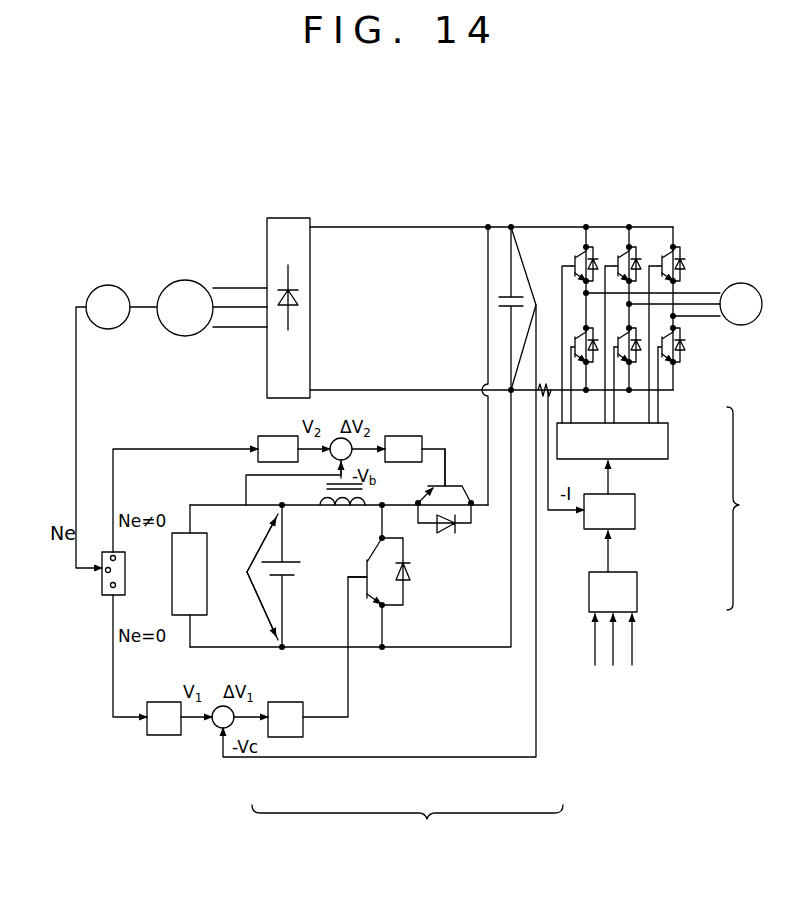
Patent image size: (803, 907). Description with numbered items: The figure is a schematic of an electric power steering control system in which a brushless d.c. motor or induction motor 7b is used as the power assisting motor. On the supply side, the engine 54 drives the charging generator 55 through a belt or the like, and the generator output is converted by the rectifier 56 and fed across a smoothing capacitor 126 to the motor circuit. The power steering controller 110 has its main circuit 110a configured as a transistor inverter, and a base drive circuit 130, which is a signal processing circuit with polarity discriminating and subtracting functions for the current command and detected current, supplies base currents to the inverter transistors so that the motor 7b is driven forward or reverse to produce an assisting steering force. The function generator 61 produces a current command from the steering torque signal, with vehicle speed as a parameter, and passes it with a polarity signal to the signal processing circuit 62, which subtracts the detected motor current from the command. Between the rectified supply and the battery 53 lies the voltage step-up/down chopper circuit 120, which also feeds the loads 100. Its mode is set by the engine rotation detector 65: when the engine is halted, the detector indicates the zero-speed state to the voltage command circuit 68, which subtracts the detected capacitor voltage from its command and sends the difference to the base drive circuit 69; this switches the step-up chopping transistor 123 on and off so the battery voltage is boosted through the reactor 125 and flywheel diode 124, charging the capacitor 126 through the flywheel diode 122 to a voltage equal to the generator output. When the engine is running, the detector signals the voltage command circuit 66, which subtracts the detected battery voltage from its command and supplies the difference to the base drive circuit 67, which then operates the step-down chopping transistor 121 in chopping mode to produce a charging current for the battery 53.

The engine 54 is at (108, 285).
The charging generator 55 is at (185, 280).
The rectifier 56 is at (287, 218).
The smoothing capacitor 126 is at (498, 297).
The main circuit 110a is at (628, 225).
The brushless d.c. motor or induction motor 7b is at (697, 240).
The base drive circuit 130 is at (668, 443).
The signal processing circuit 62 is at (636, 508).
The function generator 61 is at (638, 590).
The power steering controller 110 is at (743, 523).
The voltage command circuit 66 is at (265, 436).
The base drive circuit 67 is at (405, 436).
The voltage command circuit 68 is at (167, 737).
The base drive circuit 69 is at (284, 738).
The battery 53 is at (247, 572).
The loads 100 is at (207, 590).
The engine rotation detector 65 is at (105, 597).
The reactor 125 is at (337, 513).
The voltage step-down chopping transistor 121 is at (474, 507).
The flywheel diode 122 is at (447, 537).
The voltage step-up chopping transistor 123 is at (372, 600).
The flywheel diode 124 is at (412, 590).
The voltage step-up/down chopper circuit 120 is at (450, 857).